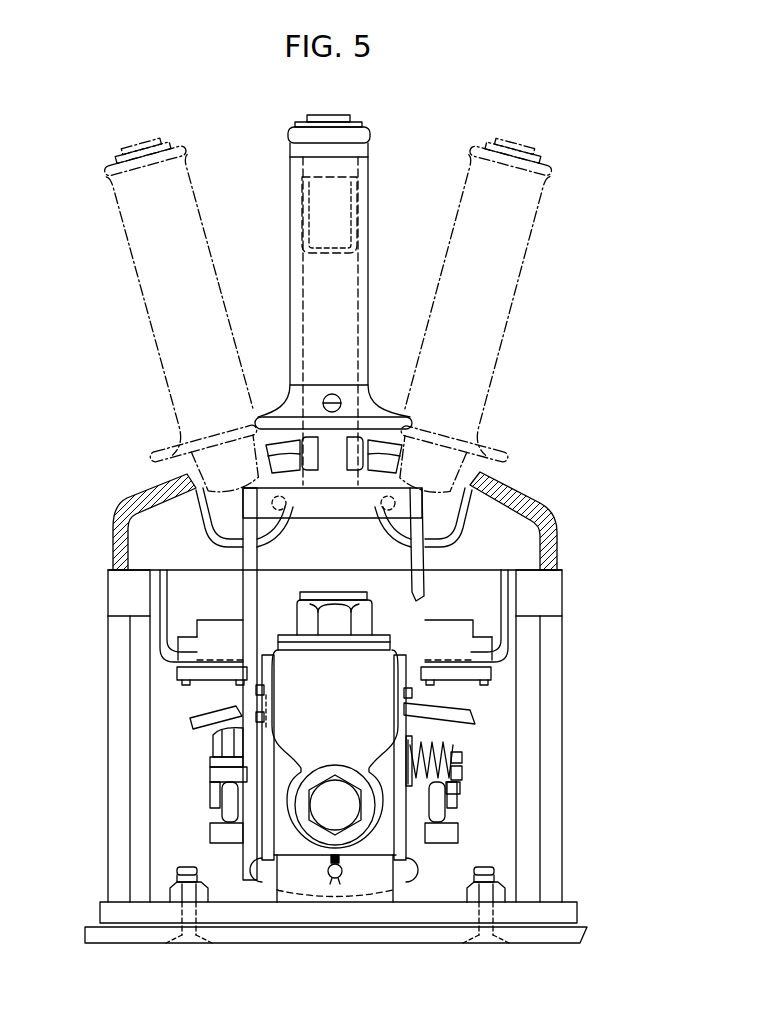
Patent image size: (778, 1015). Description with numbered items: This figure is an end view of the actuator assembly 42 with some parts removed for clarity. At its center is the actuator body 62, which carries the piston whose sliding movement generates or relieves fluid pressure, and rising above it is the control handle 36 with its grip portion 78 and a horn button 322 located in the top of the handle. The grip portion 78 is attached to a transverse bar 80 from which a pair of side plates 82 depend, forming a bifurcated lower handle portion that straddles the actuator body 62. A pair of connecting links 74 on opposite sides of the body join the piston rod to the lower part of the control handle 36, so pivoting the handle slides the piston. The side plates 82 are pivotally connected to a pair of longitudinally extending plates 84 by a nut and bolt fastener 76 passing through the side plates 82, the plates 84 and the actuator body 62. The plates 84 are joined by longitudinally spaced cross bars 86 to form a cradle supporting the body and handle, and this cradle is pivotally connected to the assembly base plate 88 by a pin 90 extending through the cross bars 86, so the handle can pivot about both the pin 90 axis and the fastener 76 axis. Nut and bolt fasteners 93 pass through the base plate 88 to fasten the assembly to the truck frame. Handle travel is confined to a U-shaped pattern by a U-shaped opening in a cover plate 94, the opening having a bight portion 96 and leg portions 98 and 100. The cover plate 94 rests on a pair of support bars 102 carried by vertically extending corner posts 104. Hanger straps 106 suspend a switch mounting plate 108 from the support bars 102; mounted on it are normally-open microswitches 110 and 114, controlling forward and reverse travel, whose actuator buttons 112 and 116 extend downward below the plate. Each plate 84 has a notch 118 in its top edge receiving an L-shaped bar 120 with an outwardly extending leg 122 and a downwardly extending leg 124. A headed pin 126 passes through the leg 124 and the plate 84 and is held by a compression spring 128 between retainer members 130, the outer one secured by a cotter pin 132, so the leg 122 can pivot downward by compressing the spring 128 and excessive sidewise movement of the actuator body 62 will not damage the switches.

The horn button 322 is at (331, 113).
The control handle 36 is at (372, 249).
The grip portion 78 is at (290, 270).
The actuator assembly 42 is at (122, 473).
The cover plate 94 is at (530, 497).
The bight portion 96 is at (392, 468).
The leg portion 98 is at (460, 505).
The leg portion 100 is at (207, 503).
The transverse bar 80 is at (363, 511).
The side plates 82 is at (258, 561).
The support bars 102 is at (117, 592).
The corner posts 104 is at (110, 691).
The hanger straps 106 is at (166, 580).
The microswitch 110 is at (213, 622).
The microswitch 114 is at (430, 622).
The switch mounting plate 108 is at (456, 672).
The actuator body 62 is at (347, 703).
The leg 124 is at (376, 766).
The actuator button 112 is at (276, 688).
The actuator button 116 is at (395, 692).
The notch 118 is at (280, 719).
The L-shaped bar 120 is at (203, 707).
The leg 122 is at (466, 713).
The compression spring 128 is at (397, 723).
The retainer members 130 is at (403, 744).
The cotter pin 132 is at (463, 759).
The headed pin 126 is at (463, 771).
The nut and bolt fastener 76 is at (213, 748).
The connecting links 74 is at (212, 815).
The longitudinally extending plates 84 is at (266, 851).
The nut and bolt fasteners 93 is at (206, 893).
The assembly base plate 88 is at (428, 917).
The cross bars 86 is at (302, 876).
The pin 90 is at (339, 879).